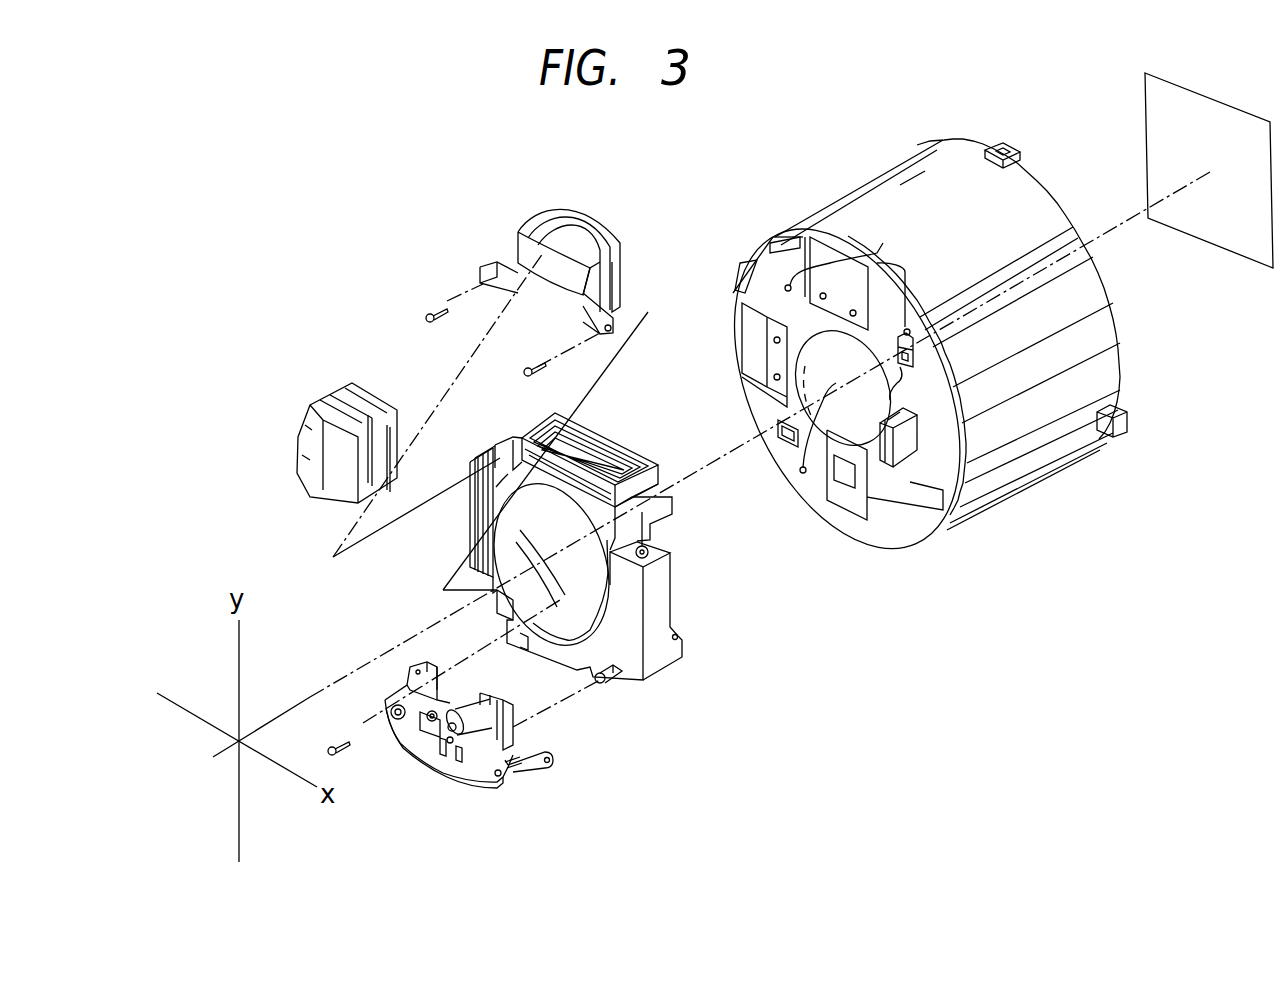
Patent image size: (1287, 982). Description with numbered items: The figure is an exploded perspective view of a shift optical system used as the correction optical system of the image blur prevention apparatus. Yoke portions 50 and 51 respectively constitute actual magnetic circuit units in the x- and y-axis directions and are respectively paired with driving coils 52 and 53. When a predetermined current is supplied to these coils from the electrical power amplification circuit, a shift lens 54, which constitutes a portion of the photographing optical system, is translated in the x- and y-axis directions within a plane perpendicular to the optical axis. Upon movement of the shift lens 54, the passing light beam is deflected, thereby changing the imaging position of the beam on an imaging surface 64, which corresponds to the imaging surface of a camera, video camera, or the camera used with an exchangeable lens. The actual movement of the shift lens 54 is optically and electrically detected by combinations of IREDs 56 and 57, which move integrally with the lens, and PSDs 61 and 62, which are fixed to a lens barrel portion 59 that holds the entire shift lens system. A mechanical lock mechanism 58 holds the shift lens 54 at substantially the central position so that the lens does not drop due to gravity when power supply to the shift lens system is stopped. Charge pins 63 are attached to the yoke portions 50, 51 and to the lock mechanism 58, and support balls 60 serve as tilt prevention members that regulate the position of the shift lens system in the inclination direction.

The yoke portion 50 is at (586, 220).
The yoke portion 51 is at (322, 404).
The driving coil 52 is at (610, 446).
The driving coil 53 is at (478, 446).
The shift lens 54 is at (580, 577).
The IRED 56 is at (507, 466).
The IRED 57 is at (494, 600).
The mechanical lock mechanism 58 is at (503, 782).
The lens barrel portion 59 is at (1042, 484).
The support balls 60 is at (886, 240).
The PSD 61 is at (788, 448).
The PSD 62 is at (898, 385).
The charge pins 63 is at (428, 318).
The imaging surface 64 is at (1243, 262).